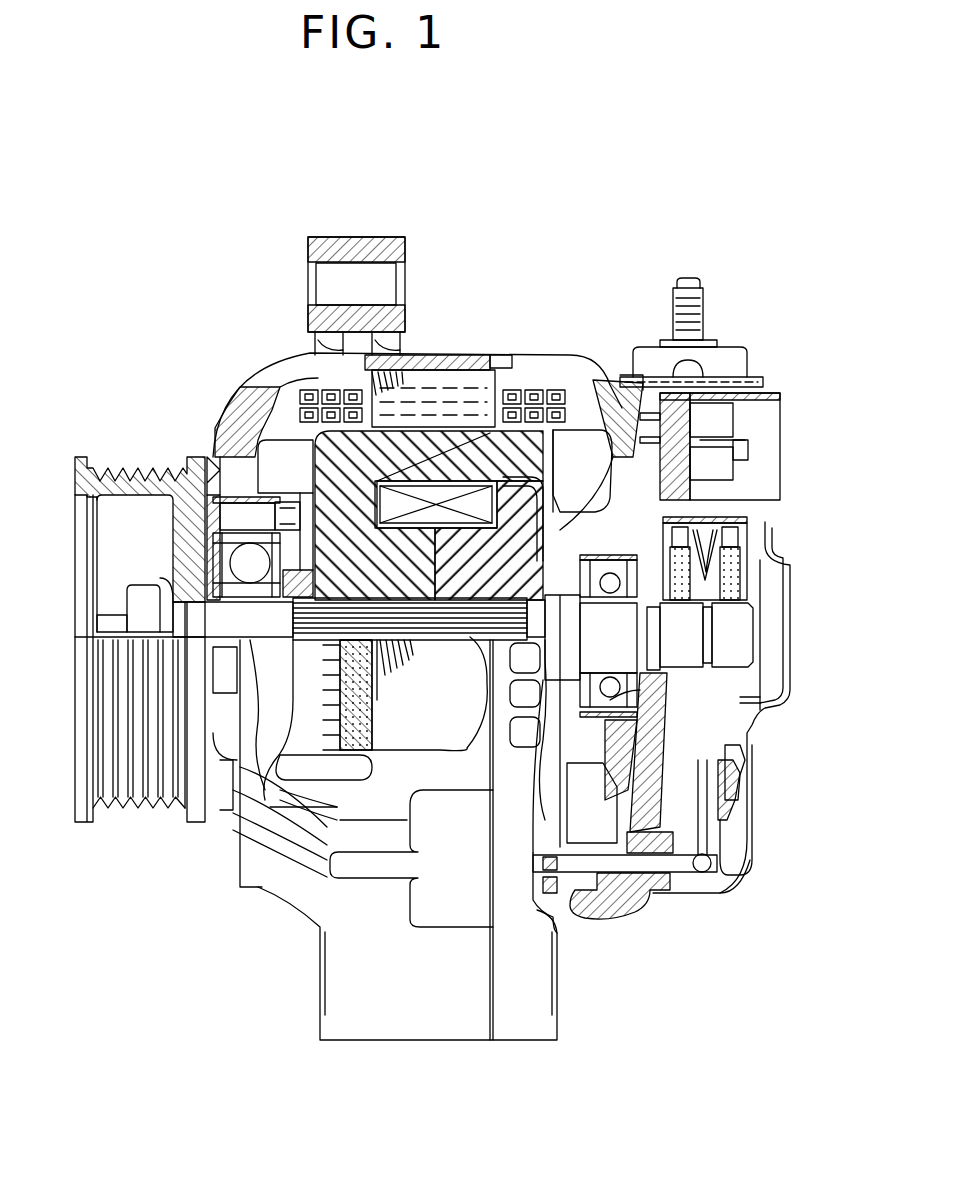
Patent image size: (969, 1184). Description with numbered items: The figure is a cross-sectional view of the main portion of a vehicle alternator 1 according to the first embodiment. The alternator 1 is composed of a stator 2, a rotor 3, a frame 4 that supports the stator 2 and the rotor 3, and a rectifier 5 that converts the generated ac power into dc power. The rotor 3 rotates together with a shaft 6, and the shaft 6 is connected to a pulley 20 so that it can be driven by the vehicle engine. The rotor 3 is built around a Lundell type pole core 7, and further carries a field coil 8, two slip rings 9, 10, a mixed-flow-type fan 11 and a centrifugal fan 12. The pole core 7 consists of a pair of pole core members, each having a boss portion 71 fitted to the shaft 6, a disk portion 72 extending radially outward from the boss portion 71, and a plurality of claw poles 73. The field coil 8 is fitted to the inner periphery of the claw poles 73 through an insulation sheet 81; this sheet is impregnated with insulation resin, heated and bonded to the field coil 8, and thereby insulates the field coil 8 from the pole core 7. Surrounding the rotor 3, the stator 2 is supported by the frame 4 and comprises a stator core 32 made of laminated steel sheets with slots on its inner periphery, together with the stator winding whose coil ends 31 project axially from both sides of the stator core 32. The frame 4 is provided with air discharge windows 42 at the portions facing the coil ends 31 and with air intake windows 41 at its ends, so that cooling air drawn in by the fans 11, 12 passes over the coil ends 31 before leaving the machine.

The alternator 1 is at (556, 258).
The stator 2 is at (533, 460).
The rotor 3 is at (360, 483).
The coil ends 31 is at (283, 425).
The stator core 32 is at (412, 383).
The frame 4 is at (442, 372).
The air intake windows 41 is at (205, 485).
The air discharge windows 42 is at (272, 378).
The rectifier 5 is at (720, 770).
The shaft 6 is at (203, 613).
The pole core 7 is at (556, 452).
The boss portion 71 is at (460, 557).
The disk portion 72 is at (310, 493).
The claw poles 73 is at (248, 383).
The field coil 8 is at (443, 497).
The insulation sheet 81 is at (487, 483).
The slip ring 9 is at (688, 652).
The slip ring 10 is at (740, 620).
The mixed-flow-type fan 11 is at (232, 483).
The centrifugal fan 12 is at (590, 487).
The pulley 20 is at (100, 497).